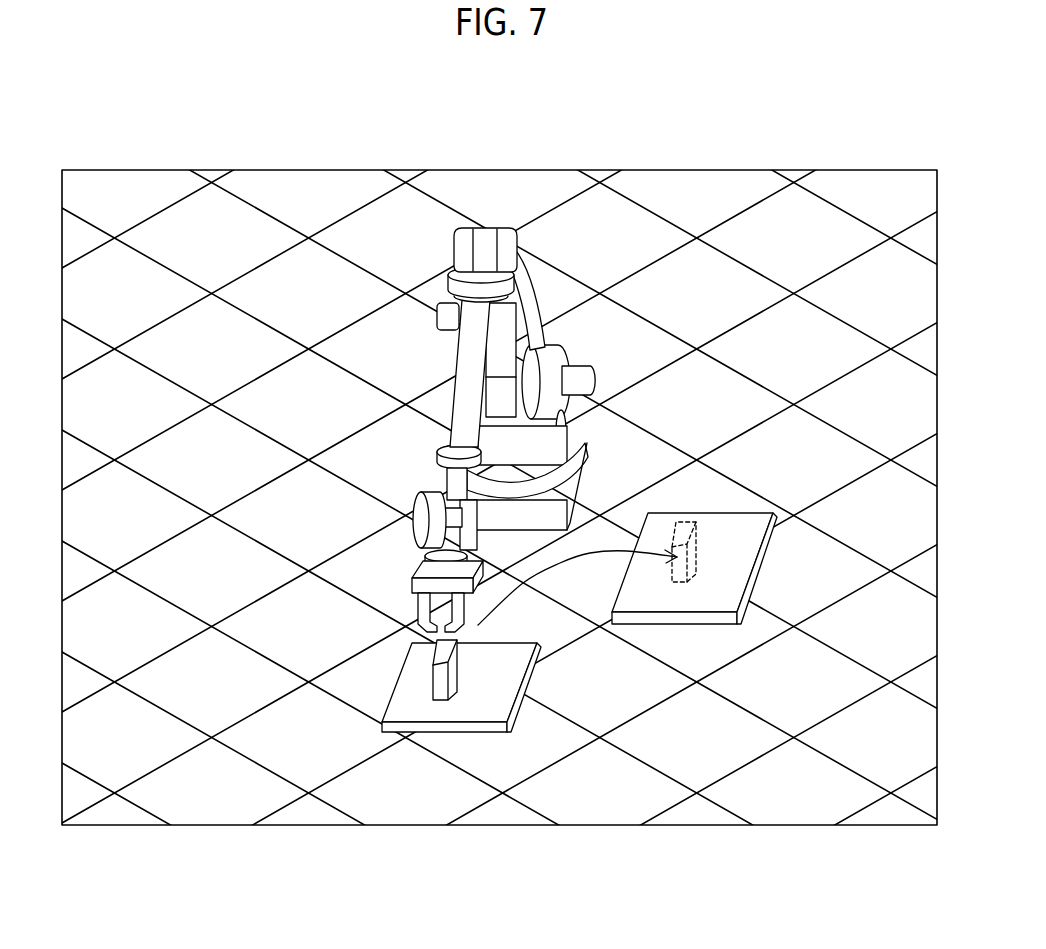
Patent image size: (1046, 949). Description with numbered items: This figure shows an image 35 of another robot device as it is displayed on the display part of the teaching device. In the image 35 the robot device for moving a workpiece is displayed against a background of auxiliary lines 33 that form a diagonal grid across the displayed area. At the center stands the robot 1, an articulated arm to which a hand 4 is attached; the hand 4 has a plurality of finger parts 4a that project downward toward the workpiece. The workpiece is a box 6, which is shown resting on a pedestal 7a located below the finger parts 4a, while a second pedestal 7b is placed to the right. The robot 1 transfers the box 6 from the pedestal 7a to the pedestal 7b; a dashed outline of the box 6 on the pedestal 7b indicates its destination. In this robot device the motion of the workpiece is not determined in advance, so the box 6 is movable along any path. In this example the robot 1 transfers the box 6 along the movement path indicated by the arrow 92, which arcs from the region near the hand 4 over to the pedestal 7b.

The robot 1 is at (388, 495).
The hand 4 is at (332, 725).
The finger parts 4a is at (418, 604).
The box 6 is at (432, 693).
The pedestal 7a is at (470, 708).
The pedestal 7b is at (658, 597).
The auxiliary lines 33 is at (357, 208).
The image 35 is at (786, 170).
The arrow 92 is at (573, 560).